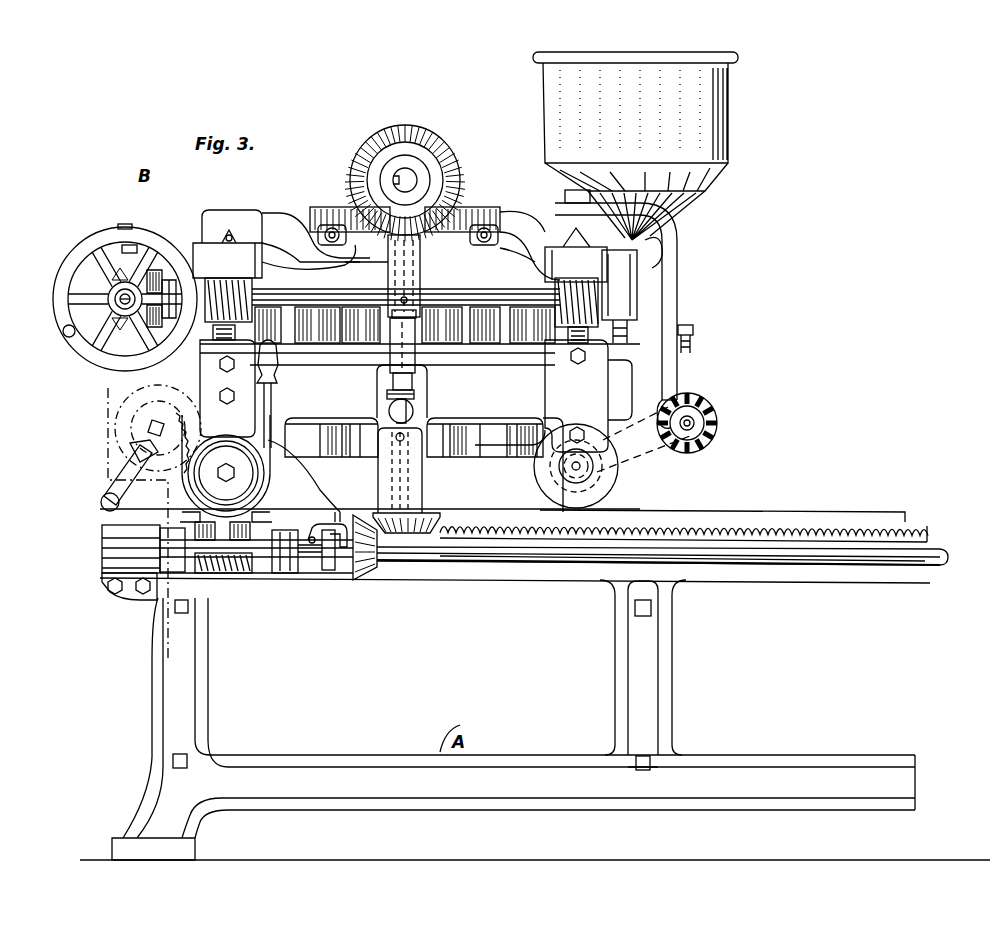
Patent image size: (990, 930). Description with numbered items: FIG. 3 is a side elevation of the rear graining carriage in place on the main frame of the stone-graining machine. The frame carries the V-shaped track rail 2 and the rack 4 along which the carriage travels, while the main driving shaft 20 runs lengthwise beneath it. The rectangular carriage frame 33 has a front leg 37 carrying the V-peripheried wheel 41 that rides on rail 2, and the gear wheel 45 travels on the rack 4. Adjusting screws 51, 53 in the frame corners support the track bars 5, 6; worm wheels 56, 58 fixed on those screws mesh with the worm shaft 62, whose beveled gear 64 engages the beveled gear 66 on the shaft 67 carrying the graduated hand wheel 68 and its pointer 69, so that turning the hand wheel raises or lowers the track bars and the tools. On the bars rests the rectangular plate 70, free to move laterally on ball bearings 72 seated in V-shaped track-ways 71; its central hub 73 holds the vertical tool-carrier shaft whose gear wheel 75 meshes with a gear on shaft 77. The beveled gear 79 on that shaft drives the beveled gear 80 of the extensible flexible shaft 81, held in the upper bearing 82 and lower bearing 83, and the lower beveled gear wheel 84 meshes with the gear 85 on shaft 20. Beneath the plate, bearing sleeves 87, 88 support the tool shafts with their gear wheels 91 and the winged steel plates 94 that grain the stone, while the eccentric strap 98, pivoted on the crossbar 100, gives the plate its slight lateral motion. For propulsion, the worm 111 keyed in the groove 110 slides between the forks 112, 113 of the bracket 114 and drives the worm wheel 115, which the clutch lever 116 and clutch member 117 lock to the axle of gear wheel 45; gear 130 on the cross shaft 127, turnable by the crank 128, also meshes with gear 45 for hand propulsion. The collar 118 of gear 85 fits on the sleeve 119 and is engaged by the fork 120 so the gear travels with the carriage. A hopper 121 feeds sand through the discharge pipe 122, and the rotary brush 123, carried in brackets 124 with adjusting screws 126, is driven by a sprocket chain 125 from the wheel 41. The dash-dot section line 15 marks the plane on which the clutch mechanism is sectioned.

The V-shaped track rail 2 is at (895, 535).
The rack 4 is at (850, 540).
The track bar 5 is at (200, 250).
The track bar 6 is at (540, 270).
The section line 15 is at (100, 397).
The main driving shaft 20 is at (615, 565).
The rectangular carriage frame 33 is at (458, 425).
The front leg 37 is at (600, 478).
The wheel 41 is at (540, 490).
The gear wheel 45 is at (145, 462).
The adjusting screw 51 is at (225, 350).
The adjusting screw 53 is at (575, 355).
The worm wheel 56 is at (252, 280).
The worm wheel 58 is at (548, 282).
The worm shaft 62 is at (325, 290).
The beveled gear 64 is at (108, 265).
The beveled gear 66 is at (150, 282).
The shaft 67 is at (115, 301).
The graduated hand wheel 68 is at (55, 270).
The pointer 69 is at (126, 226).
The rectangular plate 70 is at (498, 250).
The V-shaped track-way 71 is at (230, 230).
The ball bearing 72 is at (230, 235).
The central hub 73 is at (385, 262).
The gear wheel 75 is at (338, 210).
The shaft 77 is at (415, 178).
The beveled gear 79 is at (405, 130).
The beveled gear 80 is at (440, 185).
The extensible flexible shaft 81 is at (418, 380).
The upper bearing 82 is at (420, 272).
The lower bearing 83 is at (392, 468).
The beveled gear wheel 84 is at (422, 535).
The gear 85 is at (360, 578).
The bearing sleeve 87 is at (420, 330).
The bearing sleeve 88 is at (340, 320).
The gear wheel 91 is at (293, 322).
The steel plate 94 is at (515, 450).
The eccentric strap 98 is at (515, 232).
The crossbar 100 is at (320, 245).
The groove 110 is at (535, 562).
The worm 111 is at (228, 574).
The fork 112 is at (185, 590).
The fork 113 is at (270, 575).
The bracket 114 is at (340, 458).
The worm wheel 115 is at (104, 560).
The clutch lever 116 is at (272, 395).
The clutch member 117 is at (226, 455).
The collar 118 is at (347, 525).
The sleeve 119 is at (334, 575).
The fork 120 is at (314, 528).
The hopper 121 is at (728, 128).
The discharge pipe 122 is at (640, 320).
The rotary brush 123 is at (705, 412).
The bracket 124 is at (678, 255).
The sprocket chain 125 is at (652, 458).
The adjusting screw 126 is at (694, 345).
The cross shaft 127 is at (140, 428).
The crank 128 is at (140, 472).
The gear 130 is at (160, 452).